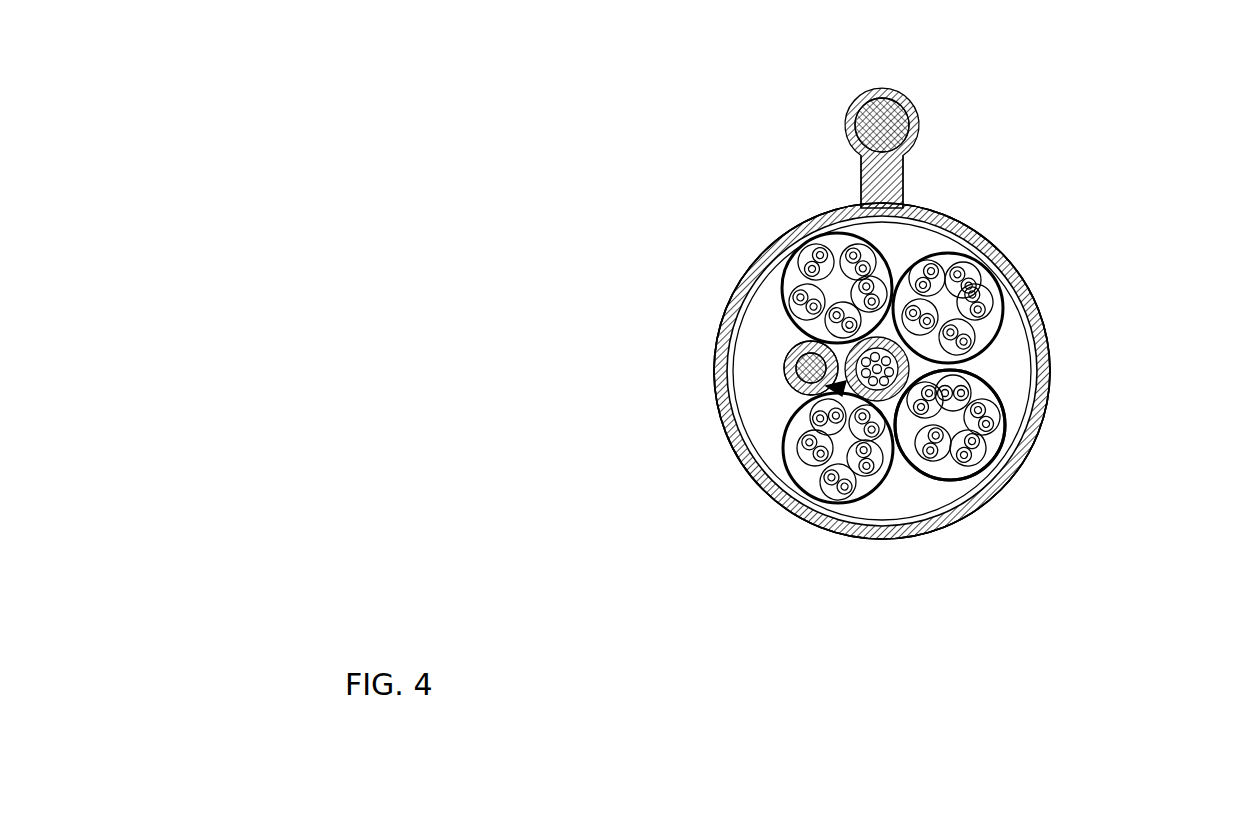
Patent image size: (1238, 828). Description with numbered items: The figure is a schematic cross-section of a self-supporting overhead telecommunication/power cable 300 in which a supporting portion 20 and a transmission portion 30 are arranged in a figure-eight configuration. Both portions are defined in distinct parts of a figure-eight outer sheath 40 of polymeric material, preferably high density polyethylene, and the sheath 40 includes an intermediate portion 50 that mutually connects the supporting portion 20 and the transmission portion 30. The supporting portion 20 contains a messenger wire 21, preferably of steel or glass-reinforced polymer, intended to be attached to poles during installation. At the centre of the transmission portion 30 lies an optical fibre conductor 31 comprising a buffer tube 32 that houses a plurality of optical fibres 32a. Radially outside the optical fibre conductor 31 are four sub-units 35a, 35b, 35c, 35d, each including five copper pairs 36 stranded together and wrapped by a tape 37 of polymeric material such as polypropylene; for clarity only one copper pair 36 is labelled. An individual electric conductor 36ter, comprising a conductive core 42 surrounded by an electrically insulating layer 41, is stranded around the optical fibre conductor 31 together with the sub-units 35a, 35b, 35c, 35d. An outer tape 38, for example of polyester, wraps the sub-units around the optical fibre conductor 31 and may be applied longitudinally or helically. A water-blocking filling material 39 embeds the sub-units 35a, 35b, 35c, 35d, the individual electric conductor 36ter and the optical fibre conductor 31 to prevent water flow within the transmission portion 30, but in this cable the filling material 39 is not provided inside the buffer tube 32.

The self-supporting overhead telecommunication/power cable 300 is at (1111, 192).
The supporting portion 20 is at (842, 122).
The messenger wire 21 is at (897, 98).
The intermediate portion 50 is at (910, 178).
The transmission portion 30 is at (722, 257).
The outer tape 38 is at (1040, 308).
The figure-8 outer sheath 40 is at (1050, 382).
The water-blocking filling material 39 is at (773, 435).
The sub-unit 35a is at (872, 507).
The sub-unit 35b is at (772, 300).
The sub-unit 35c is at (928, 482).
The sub-unit 35d is at (908, 258).
The optical fibre conductor 31 is at (806, 418).
The copper pair 36 is at (942, 463).
The tape 37 is at (1006, 420).
The electrically insulating layer 41 is at (805, 375).
The individual electric conductor 36ter is at (781, 370).
The buffer tube 32 is at (895, 364).
The optical fibres 32a is at (858, 360).
The conductive core 42 is at (838, 386).